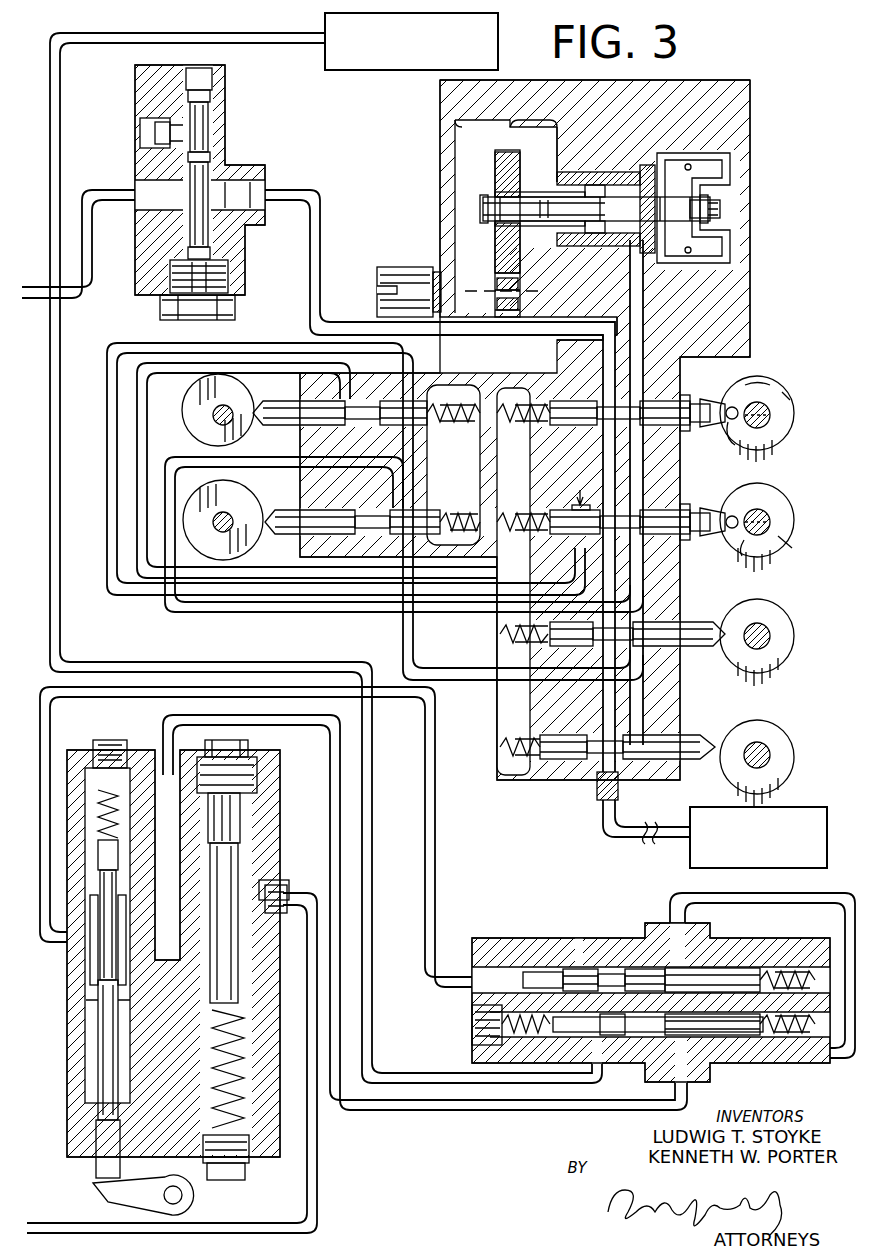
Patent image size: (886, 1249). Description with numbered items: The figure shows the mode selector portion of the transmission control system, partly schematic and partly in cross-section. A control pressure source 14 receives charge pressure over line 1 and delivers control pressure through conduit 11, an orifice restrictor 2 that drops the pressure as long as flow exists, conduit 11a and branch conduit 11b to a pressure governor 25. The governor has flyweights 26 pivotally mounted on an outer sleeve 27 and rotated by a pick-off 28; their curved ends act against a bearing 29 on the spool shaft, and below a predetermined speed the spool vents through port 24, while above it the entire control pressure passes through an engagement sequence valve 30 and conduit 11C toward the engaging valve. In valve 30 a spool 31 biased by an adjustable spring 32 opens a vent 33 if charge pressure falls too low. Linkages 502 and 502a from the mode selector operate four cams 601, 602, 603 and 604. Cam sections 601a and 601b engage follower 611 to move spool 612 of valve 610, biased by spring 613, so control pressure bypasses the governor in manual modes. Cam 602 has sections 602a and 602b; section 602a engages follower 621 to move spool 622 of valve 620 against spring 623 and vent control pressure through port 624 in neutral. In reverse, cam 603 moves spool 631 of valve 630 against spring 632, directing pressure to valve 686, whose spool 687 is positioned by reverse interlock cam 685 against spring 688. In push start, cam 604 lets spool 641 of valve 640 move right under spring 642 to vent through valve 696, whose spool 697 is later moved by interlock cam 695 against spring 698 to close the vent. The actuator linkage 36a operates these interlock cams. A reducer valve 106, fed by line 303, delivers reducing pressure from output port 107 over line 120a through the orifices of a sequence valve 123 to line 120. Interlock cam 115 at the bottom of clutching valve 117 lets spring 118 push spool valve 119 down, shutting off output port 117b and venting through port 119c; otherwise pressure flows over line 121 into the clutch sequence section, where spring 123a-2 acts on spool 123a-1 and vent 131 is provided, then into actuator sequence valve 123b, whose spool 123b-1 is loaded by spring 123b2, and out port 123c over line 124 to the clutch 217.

The line 1 is at (235, 53).
The orifice restrictor 2 is at (597, 789).
The control pressure conduit 11 is at (637, 828).
The conduit 11a is at (622, 571).
The branch conduit 11b is at (650, 326).
The conduit 11C is at (97, 192).
The control pressure source 14 is at (795, 807).
The vent port 24 is at (587, 158).
The pressure governor 25 is at (541, 172).
The flyweights 26 is at (722, 170).
The outer sleeve 27 is at (583, 255).
The pick-off 28 is at (520, 305).
The bearing 29 is at (700, 230).
The engagement sequence valve 30 is at (235, 139).
The spool 31 is at (205, 130).
The adjustable spring 32 is at (232, 265).
The vent 33 is at (131, 133).
The actuator linkage 36a is at (213, 418).
The reducer valve 106 is at (313, 819).
The output port 107 is at (165, 767).
The interlock cam 115 is at (112, 1193).
The clutching valve 117 is at (60, 1075).
The output port 117b is at (107, 963).
The spring 118 is at (93, 752).
The spool valve 119 is at (72, 991).
The vent port 119c is at (72, 1013).
The line 120 is at (742, 900).
The line 120a is at (403, 1108).
The line 121 is at (45, 712).
The sequence valve 123 is at (509, 918).
The spool 123a-1 is at (650, 972).
The spring 123a-2 is at (780, 968).
The actuator sequence valve 123b is at (689, 1078).
The spool 123b-1 is at (740, 1030).
The spring 123b2 is at (795, 1030).
The port 123c is at (600, 1068).
The line 124 is at (55, 118).
The vent 131 is at (580, 955).
The clutch 217 is at (411, 41).
The line 303 is at (295, 900).
The linkage 502 is at (781, 408).
The linkage 502a is at (772, 422).
The cam 601 is at (805, 430).
The cam section 601a is at (752, 378).
The cam section 601b is at (778, 385).
The cam 602 is at (804, 518).
The cam section 602a is at (790, 542).
The cam section 602b is at (757, 552).
The cam 603 is at (796, 655).
The cam 604 is at (795, 769).
The valve 610 is at (686, 394).
The follower 611 is at (717, 437).
The spool 612 is at (687, 432).
The spring 613 is at (523, 427).
The valve 620 is at (686, 499).
The follower 621 is at (713, 540).
The spool 622 is at (688, 540).
The spring 623 is at (510, 516).
The port 624 is at (578, 497).
The valve 630 is at (713, 614).
The spool 631 is at (700, 645).
The spring 632 is at (523, 615).
The valve 640 is at (694, 721).
The spool 641 is at (697, 758).
The spring 642 is at (511, 740).
The reverse interlock cam 685 is at (200, 393).
The valve 686 is at (293, 393).
The spool 687 is at (293, 420).
The spring 688 is at (472, 425).
The interlock cam 695 is at (217, 497).
The valve 696 is at (287, 505).
The spool 697 is at (333, 517).
The spring 698 is at (466, 512).